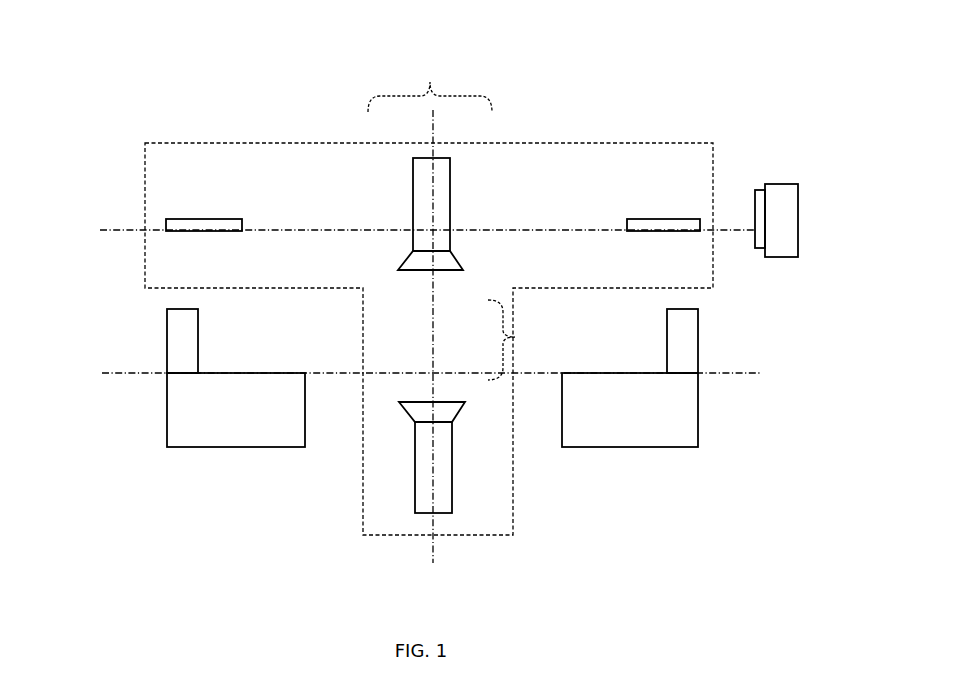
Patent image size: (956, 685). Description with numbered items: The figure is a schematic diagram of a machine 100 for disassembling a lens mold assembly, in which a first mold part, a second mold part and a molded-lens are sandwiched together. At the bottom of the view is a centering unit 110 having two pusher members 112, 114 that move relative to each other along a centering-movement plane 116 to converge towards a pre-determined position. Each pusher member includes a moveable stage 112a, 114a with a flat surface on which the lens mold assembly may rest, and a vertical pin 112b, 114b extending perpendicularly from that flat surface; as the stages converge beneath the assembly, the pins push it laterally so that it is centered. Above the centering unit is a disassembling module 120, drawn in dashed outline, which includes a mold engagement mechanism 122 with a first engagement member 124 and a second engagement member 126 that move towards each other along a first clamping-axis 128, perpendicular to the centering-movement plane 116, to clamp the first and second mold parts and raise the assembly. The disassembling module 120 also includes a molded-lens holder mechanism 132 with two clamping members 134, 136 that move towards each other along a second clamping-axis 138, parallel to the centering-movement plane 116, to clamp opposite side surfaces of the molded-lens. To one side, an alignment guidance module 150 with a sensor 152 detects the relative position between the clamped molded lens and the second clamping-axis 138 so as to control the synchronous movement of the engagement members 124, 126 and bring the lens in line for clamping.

The machine 100 is at (627, 90).
The centering unit 110 is at (429, 437).
The pusher member 112 is at (186, 448).
The moveable stage 112a is at (265, 433).
The vertical pin 112b is at (187, 340).
The pusher member 114 is at (668, 452).
The moveable stage 114a is at (597, 430).
The vertical pin 114b is at (678, 335).
The centering-movement plane 116 is at (123, 377).
The disassembling module 120 is at (638, 147).
The mold engagement mechanism 122 is at (481, 335).
The first engagement member 124 is at (450, 273).
The second engagement member 126 is at (442, 400).
The first clamping-axis 128 is at (432, 552).
The molded-lens holder mechanism 132 is at (433, 139).
The clamping member 134 is at (226, 219).
The clamping member 136 is at (638, 219).
The second clamping-axis 138 is at (135, 229).
The alignment guidance module 150 is at (782, 173).
The sensor 152 is at (788, 248).